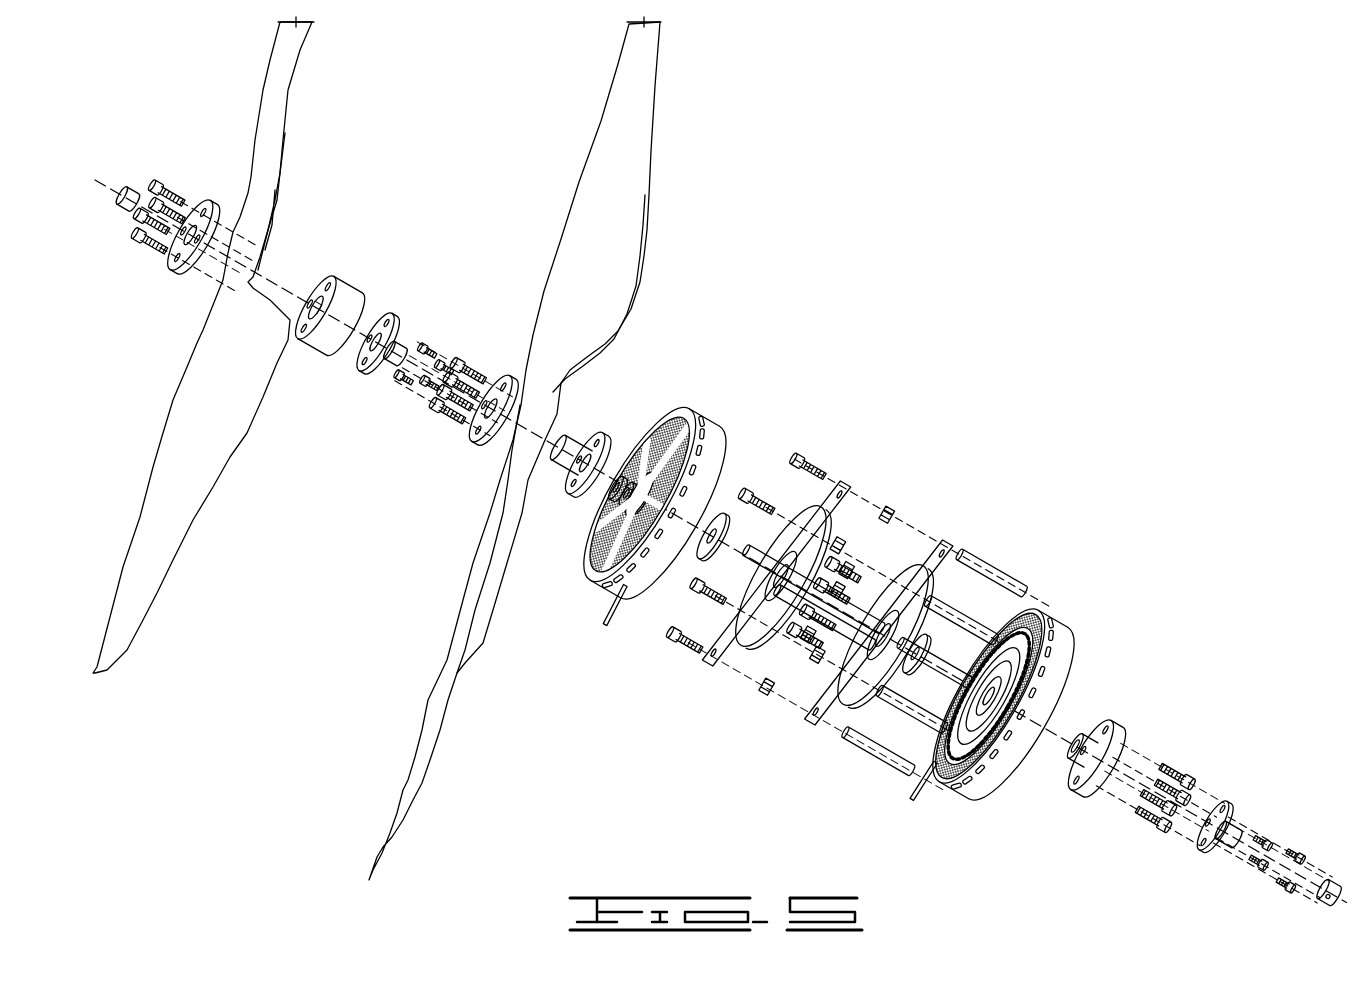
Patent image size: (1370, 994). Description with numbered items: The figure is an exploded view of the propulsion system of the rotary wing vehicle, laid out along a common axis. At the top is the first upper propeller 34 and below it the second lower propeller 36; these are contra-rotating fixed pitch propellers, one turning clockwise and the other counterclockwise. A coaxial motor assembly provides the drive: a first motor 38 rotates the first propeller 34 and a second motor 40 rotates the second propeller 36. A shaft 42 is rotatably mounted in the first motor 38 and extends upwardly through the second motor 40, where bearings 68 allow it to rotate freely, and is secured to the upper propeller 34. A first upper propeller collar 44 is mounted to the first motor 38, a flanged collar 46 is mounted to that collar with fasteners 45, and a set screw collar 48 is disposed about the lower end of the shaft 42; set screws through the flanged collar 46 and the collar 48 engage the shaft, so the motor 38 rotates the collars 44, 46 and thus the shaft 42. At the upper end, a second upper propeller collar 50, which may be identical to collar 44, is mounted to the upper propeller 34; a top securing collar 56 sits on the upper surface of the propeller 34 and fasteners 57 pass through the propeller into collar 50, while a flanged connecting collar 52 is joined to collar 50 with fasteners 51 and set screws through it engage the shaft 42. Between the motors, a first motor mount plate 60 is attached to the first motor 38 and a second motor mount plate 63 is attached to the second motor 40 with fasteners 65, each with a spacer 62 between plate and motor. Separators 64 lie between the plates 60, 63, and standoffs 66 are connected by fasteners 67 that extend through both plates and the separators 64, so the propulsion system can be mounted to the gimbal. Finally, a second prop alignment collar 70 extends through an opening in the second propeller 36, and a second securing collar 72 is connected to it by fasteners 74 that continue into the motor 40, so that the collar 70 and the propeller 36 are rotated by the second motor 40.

The first upper propeller 34 is at (143, 620).
The second lower propeller 36 is at (403, 790).
The first motor 38 is at (1058, 628).
The second motor 40 is at (608, 592).
The shaft 42 is at (935, 695).
The first upper propeller collar 44 is at (1093, 777).
The fasteners 45 is at (1260, 866).
The flanged collar 46 is at (1221, 807).
The set screw collar 48 is at (1316, 891).
The second upper propeller collar 50 is at (353, 287).
The fasteners 51 is at (420, 340).
The flanged connecting collar 52 is at (357, 363).
The top securing collar 56 is at (167, 270).
The fasteners 57 is at (158, 183).
The first motor mount plate 60 is at (818, 727).
The spacer 62 is at (728, 505).
The second motor mount plate 63 is at (847, 482).
The separators 64 is at (888, 508).
The fasteners 65 is at (852, 568).
The standoffs 66 is at (963, 556).
The fasteners 67 is at (806, 455).
The bearings 68 is at (635, 478).
The second prop alignment collar 70 is at (598, 438).
The second securing collar 72 is at (463, 433).
The fasteners 74 is at (427, 410).